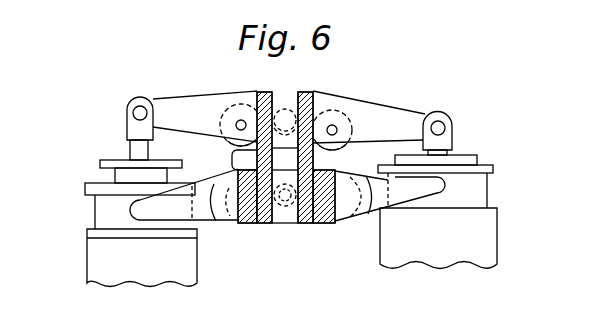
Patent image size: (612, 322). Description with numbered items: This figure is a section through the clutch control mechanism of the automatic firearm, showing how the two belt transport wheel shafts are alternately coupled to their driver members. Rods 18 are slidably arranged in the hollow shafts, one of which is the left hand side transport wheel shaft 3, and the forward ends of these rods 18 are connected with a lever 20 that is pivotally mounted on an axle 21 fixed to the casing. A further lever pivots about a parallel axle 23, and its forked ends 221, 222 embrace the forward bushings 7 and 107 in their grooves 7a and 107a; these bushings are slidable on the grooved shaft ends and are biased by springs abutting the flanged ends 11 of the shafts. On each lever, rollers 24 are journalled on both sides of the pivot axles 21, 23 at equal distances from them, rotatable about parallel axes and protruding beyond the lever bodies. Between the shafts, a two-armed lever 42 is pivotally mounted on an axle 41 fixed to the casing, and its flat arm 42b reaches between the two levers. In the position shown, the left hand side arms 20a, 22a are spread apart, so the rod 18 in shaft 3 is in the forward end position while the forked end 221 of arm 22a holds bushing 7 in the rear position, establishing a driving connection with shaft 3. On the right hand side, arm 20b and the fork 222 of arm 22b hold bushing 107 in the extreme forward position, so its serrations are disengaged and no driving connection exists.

The hollow shaft 3 is at (118, 177).
The bushing 7 is at (85, 189).
The groove 7a is at (95, 212).
The flanged end 11 is at (100, 162).
The rod 18 is at (137, 152).
The lever 20 is at (285, 171).
The lever arm 20a is at (158, 104).
The lever arm 20b is at (419, 115).
The axle 21 is at (286, 114).
The lever arm 22a is at (230, 222).
The lever arm 22b is at (343, 212).
The axle 23 is at (287, 205).
The rollers 24 is at (228, 149).
The axle 41 is at (294, 225).
The two-armed lever 42 is at (266, 225).
The lever arm 42b is at (240, 158).
The bushing 107 is at (493, 169).
The groove 107a is at (487, 193).
The forked end 221 is at (152, 212).
The forked end 222 is at (434, 187).